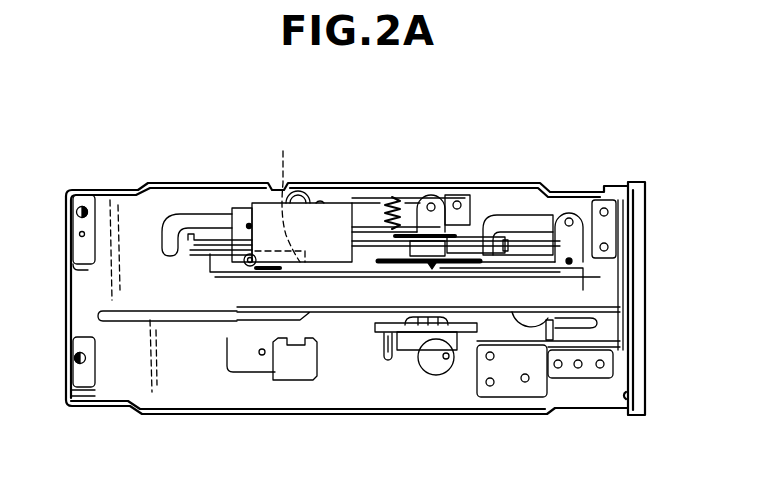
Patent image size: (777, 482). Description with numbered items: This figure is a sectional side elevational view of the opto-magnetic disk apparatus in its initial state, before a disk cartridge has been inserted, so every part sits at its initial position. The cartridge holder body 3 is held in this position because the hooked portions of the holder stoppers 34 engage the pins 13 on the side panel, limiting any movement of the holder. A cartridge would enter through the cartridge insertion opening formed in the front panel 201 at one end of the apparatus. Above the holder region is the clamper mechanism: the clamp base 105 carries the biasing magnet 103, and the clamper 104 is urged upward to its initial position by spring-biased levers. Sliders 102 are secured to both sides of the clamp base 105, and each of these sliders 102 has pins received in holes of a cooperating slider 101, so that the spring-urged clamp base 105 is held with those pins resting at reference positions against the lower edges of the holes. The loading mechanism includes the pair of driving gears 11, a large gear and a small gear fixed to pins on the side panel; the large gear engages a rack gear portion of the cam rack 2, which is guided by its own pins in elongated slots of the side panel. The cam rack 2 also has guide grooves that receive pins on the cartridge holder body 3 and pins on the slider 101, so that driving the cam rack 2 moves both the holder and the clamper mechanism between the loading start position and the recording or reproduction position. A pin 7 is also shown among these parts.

The cam rack 2 is at (247, 323).
The cartridge holder body 3 is at (568, 218).
The pin 7 is at (408, 338).
The driving gears 11 is at (442, 367).
The pins 13 is at (265, 272).
The holder stoppers 34 is at (280, 193).
The slider 101 is at (372, 335).
The sliders 102 is at (360, 203).
The biasing magnet 103 is at (258, 207).
The clamper 104 is at (425, 245).
The clamp base 105 is at (478, 238).
The front panel 201 is at (648, 246).